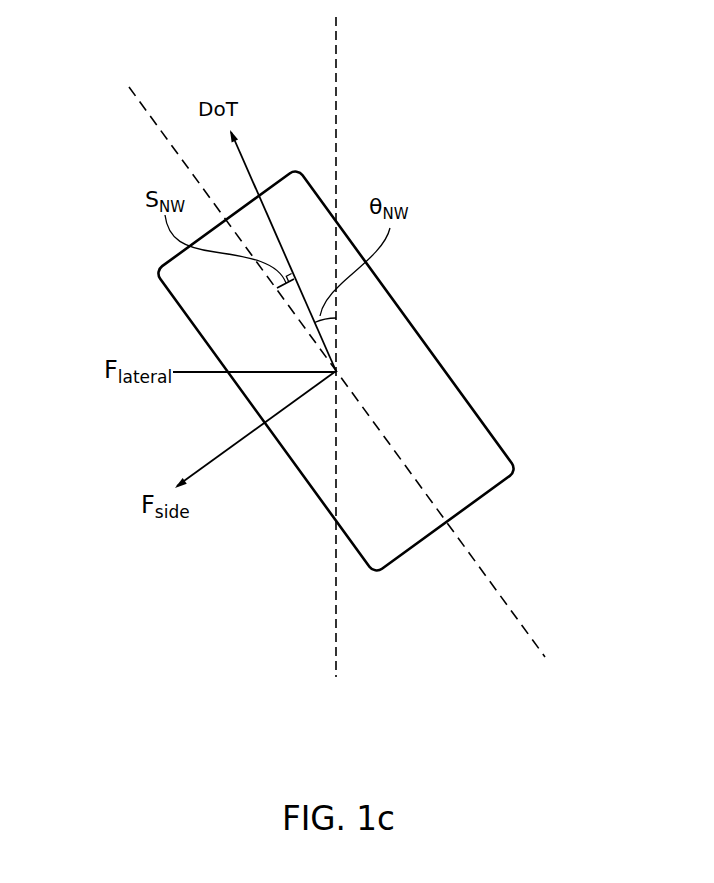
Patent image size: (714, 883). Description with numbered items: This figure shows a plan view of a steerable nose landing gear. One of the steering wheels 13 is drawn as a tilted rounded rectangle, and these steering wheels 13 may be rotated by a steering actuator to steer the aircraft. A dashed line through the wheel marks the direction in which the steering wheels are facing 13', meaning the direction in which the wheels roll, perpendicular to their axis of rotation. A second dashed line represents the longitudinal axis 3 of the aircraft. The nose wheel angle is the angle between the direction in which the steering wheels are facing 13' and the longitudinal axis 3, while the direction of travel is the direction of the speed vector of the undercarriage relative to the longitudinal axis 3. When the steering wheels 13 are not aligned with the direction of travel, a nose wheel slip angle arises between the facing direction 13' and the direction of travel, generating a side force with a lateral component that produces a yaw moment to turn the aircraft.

The longitudinal axis 3 is at (337, 55).
The steering wheels 13 is at (357, 371).
The direction in which the steering wheels are facing 13' is at (303, 372).